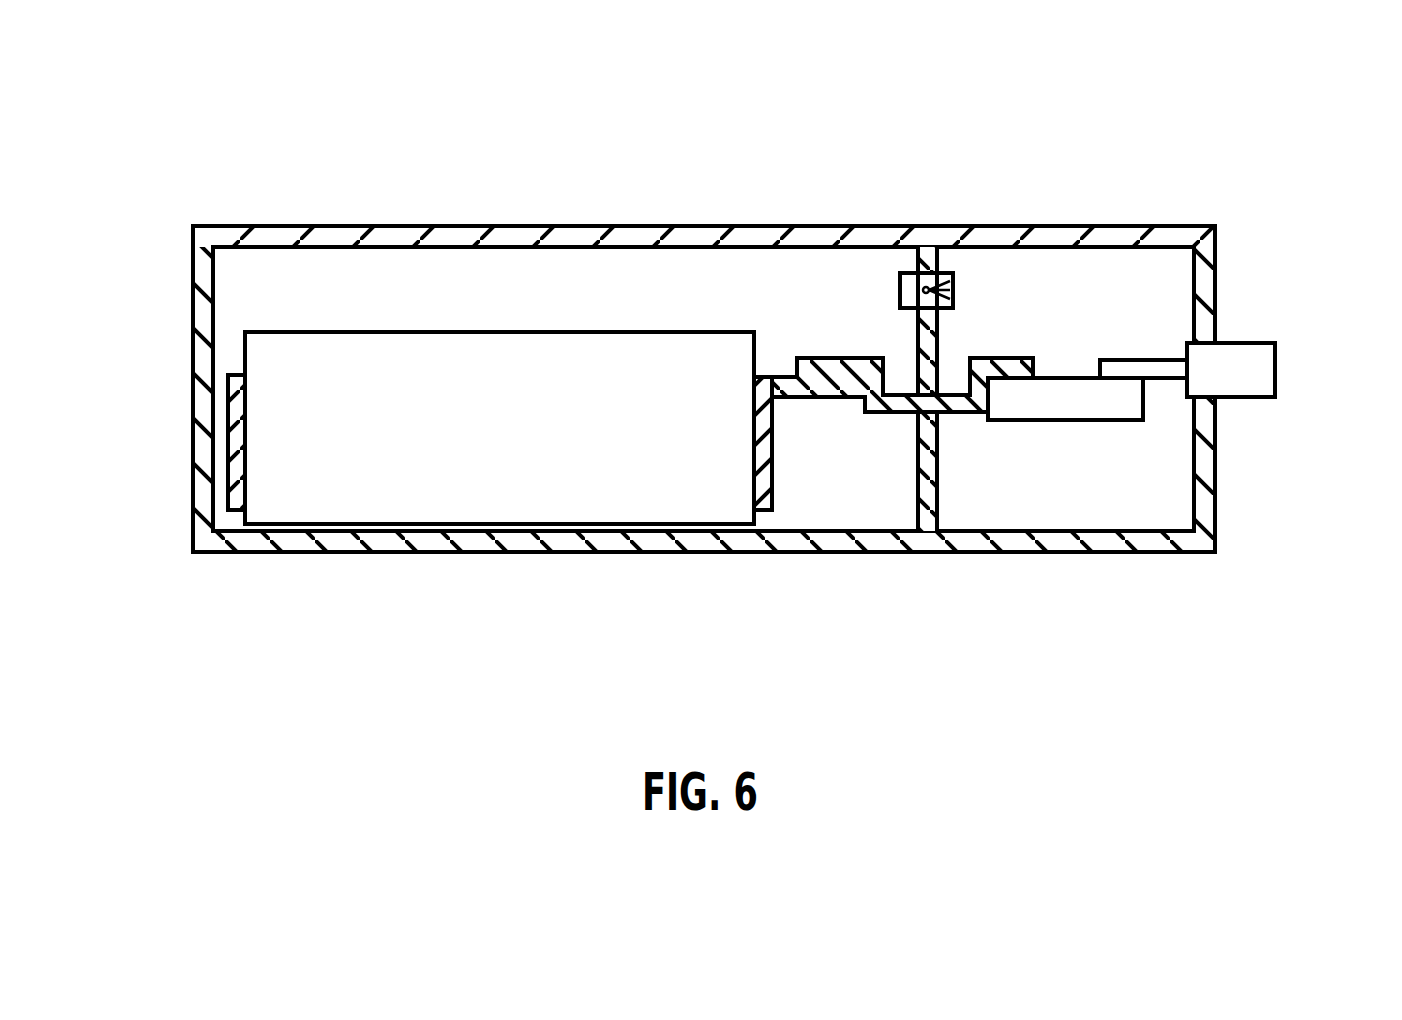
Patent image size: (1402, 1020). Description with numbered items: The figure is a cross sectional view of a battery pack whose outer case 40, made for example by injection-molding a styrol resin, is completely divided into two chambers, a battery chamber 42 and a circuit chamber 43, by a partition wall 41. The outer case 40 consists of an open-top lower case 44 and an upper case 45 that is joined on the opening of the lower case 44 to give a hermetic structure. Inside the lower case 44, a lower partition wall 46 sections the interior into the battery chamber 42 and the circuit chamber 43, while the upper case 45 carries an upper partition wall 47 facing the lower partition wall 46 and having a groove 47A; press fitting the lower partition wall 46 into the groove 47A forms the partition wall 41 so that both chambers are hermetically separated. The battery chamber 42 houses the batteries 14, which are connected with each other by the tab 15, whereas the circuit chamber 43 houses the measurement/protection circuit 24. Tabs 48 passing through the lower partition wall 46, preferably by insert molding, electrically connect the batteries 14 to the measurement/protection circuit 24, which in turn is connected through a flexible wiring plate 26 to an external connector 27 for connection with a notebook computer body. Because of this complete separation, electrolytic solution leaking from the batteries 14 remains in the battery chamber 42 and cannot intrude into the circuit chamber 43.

The batteries 14 is at (633, 495).
The tab 15 is at (235, 500).
The measurement/protection circuit 24 is at (1090, 420).
The flexible wiring plate 26 is at (1158, 372).
The external connector 27 is at (1260, 378).
The outer case 40 is at (623, 389).
The partition wall 41 is at (901, 295).
The battery chamber 42 is at (504, 292).
The circuit chamber 43 is at (1118, 285).
The lower case 44 is at (98, 250).
The upper case 45 is at (204, 273).
The lower partition wall 46 is at (918, 332).
The upper partition wall 47 is at (926, 262).
The groove 47A is at (953, 292).
The tabs 48 is at (893, 415).